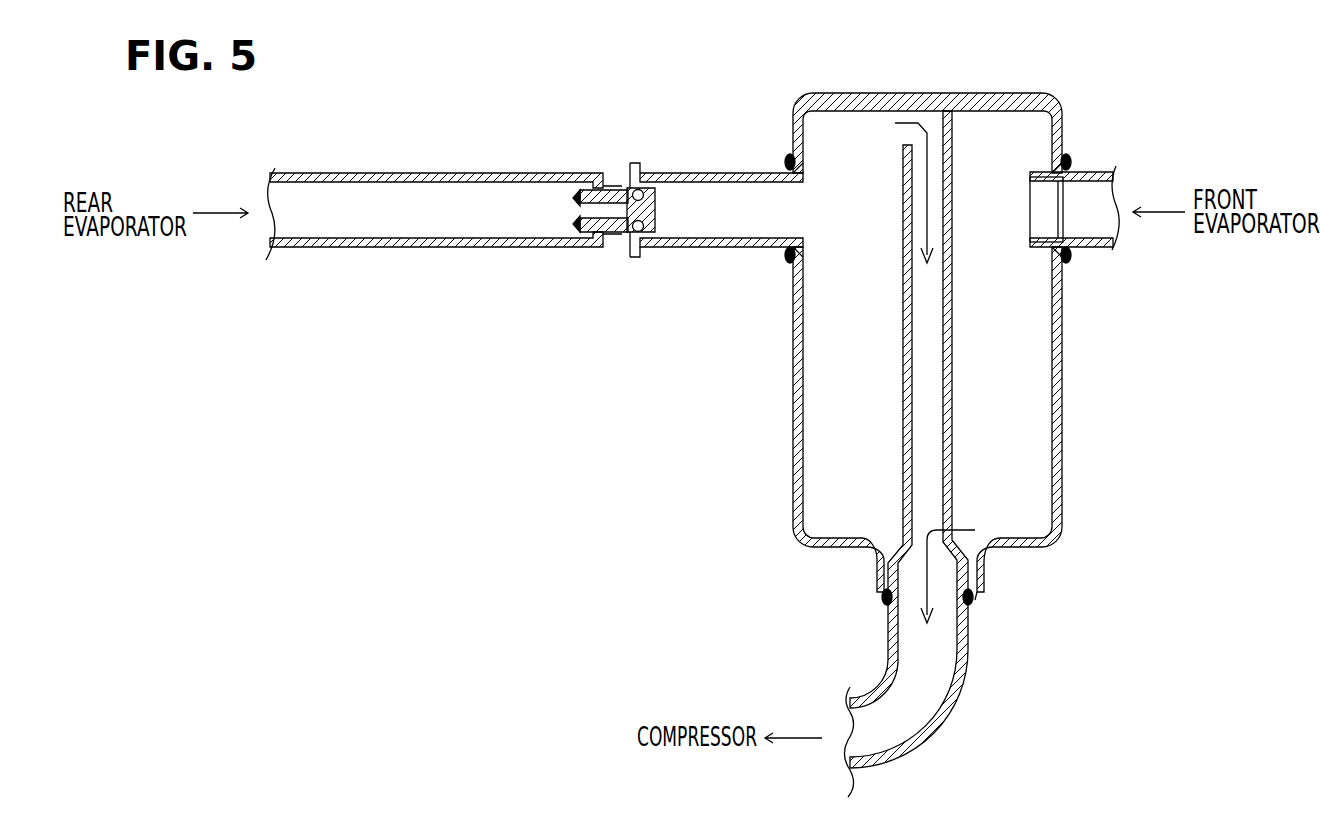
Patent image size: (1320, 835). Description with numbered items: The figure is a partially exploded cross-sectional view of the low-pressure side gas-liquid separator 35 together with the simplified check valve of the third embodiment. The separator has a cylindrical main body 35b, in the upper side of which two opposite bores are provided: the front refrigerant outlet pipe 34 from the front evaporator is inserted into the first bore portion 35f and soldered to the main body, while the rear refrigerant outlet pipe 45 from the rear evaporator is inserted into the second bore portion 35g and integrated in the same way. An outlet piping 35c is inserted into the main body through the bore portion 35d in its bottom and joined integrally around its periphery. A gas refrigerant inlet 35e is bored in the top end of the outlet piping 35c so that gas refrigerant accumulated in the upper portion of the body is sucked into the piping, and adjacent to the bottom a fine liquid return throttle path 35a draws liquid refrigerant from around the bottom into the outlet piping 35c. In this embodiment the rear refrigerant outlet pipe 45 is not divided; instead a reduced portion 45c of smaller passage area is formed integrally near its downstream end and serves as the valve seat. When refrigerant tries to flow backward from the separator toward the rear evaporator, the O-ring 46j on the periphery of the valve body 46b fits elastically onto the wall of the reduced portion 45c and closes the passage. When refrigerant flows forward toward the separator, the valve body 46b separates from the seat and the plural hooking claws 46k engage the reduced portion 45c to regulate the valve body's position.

The front refrigerant outlet pipe 34 is at (1093, 172).
The gas-liquid separator 35 is at (1037, 70).
The liquid return throttle path 35a is at (948, 528).
The cylindrical main body 35b is at (1058, 298).
The outlet piping 35c is at (952, 296).
The bore portion 35d is at (884, 583).
The gas refrigerant inlet 35e is at (925, 140).
The first bore portion 35f is at (1045, 170).
The second bore portion 35g is at (806, 174).
The rear refrigerant outlet pipe 45 is at (428, 172).
The reduced portion 45c is at (620, 188).
The valve body 46b is at (662, 232).
The O-ring 46j is at (645, 187).
The hooking claws 46k is at (580, 197).